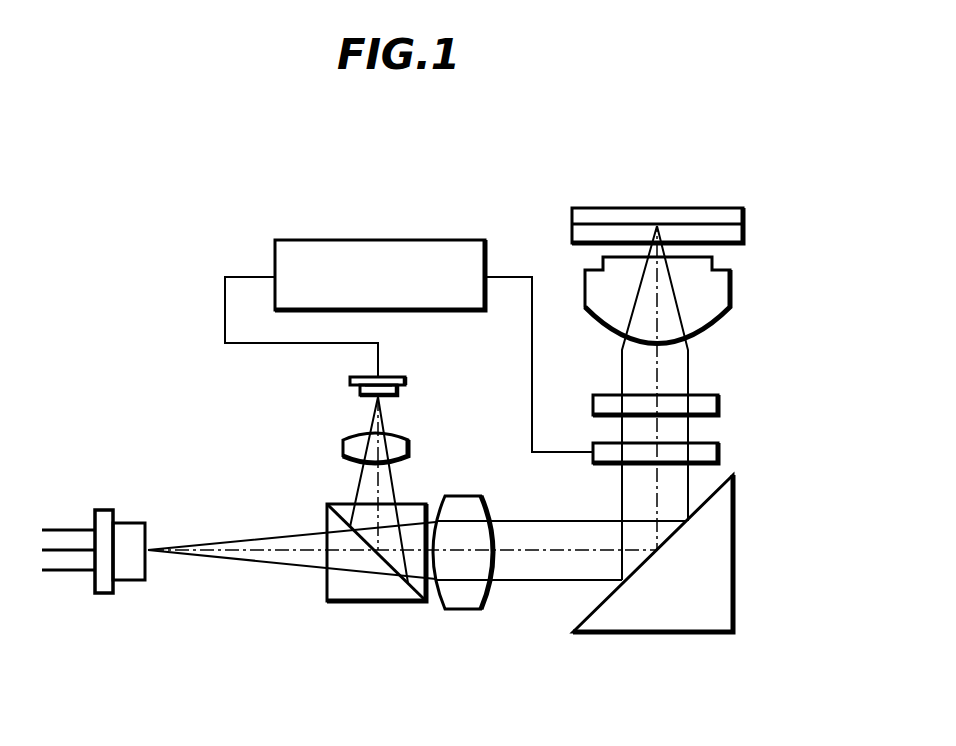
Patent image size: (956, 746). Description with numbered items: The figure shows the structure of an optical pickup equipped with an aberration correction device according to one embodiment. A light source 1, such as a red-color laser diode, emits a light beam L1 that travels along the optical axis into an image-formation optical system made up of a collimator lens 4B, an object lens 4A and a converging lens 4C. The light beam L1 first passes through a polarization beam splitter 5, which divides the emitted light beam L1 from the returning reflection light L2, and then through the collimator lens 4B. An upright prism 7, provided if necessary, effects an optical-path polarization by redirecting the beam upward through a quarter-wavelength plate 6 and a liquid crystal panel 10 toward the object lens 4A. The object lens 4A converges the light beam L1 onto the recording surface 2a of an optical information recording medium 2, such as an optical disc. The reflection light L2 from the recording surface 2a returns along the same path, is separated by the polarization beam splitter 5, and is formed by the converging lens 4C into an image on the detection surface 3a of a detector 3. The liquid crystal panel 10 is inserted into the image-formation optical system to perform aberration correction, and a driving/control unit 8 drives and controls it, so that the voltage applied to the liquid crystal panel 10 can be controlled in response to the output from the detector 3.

The light source 1 is at (107, 510).
The optical information recording medium 2 is at (745, 213).
The recording surface 2a is at (722, 228).
The detector 3 is at (350, 381).
The detection surface 3a is at (392, 398).
The object lens 4A is at (733, 300).
The collimator lens 4B is at (465, 612).
The converging lens 4C is at (410, 445).
The polarization beam splitter 5 is at (360, 603).
The ¼λ wave length plate 6 is at (720, 402).
The upright prism 7 is at (735, 522).
The driving/control unit 8 is at (428, 240).
The liquid crystal panel 10 is at (720, 452).
The light beam L1 is at (250, 537).
The reflection light L2 is at (393, 484).